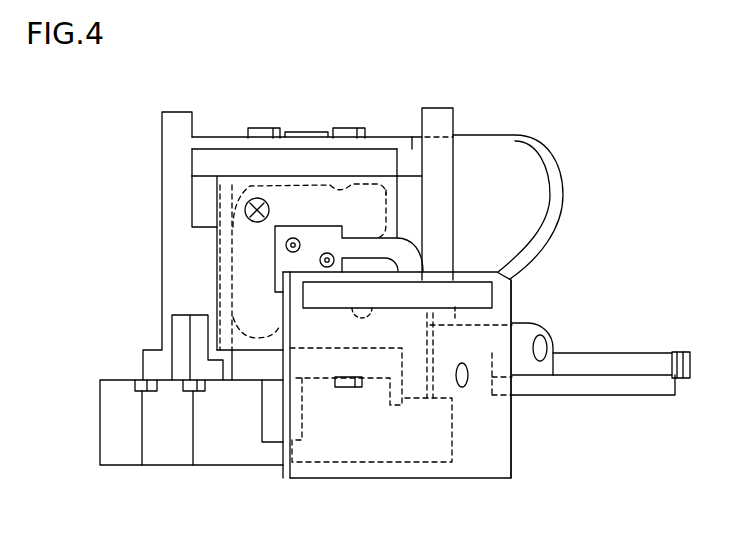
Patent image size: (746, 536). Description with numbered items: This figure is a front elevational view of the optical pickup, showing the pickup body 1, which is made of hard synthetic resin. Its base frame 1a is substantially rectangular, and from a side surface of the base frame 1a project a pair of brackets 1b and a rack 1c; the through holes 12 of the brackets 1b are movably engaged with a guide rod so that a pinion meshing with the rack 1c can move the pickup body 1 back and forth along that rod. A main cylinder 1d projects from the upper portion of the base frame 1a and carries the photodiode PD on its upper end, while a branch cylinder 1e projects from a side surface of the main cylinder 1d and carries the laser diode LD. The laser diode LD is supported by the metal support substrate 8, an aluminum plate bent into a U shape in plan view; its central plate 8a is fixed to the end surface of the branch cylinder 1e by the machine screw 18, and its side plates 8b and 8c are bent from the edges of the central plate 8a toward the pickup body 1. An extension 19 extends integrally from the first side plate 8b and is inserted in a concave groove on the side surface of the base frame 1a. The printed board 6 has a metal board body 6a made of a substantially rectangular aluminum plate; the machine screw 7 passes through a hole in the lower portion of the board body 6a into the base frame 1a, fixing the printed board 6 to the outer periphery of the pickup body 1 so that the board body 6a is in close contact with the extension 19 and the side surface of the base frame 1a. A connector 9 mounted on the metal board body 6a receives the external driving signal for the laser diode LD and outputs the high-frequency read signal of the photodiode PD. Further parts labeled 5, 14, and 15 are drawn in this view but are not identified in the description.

The pickup body 1 is at (161, 232).
The base frame 1a is at (105, 421).
The brackets 1b is at (530, 325).
The rack 1c is at (683, 352).
The main cylinder 1d is at (207, 253).
The branch cylinder 1e is at (247, 277).
The hook arm 5 is at (514, 266).
The printed board 6 is at (514, 440).
The metal board body 6a is at (283, 413).
The machine screw 7 is at (463, 388).
The metal support substrate 8 is at (377, 175).
The central plate 8a is at (340, 192).
The first side plate 8b is at (410, 183).
The second side plate 8c is at (203, 205).
The connector 9 is at (513, 296).
The through holes 12 is at (546, 348).
The adjusting member 14 is at (362, 386).
The stopper 15 is at (338, 388).
The machine screw 18 is at (252, 197).
The extension 19 is at (418, 398).
The photodiode PD is at (308, 131).
The laser diode LD is at (320, 232).